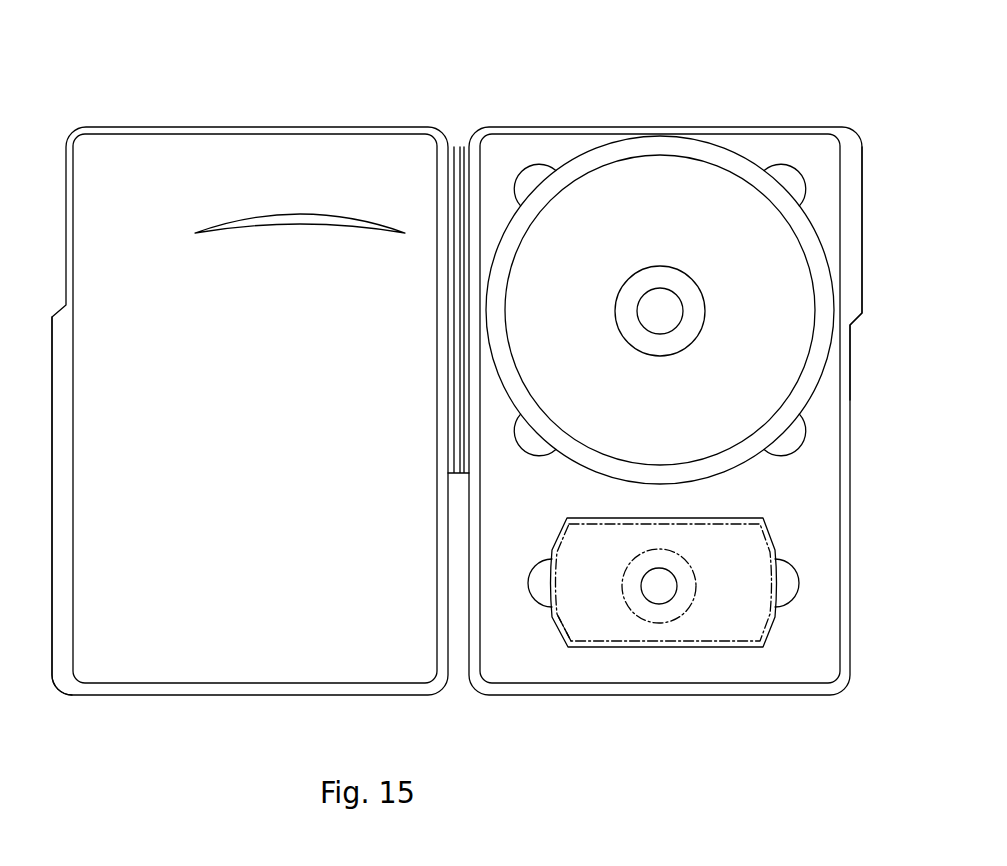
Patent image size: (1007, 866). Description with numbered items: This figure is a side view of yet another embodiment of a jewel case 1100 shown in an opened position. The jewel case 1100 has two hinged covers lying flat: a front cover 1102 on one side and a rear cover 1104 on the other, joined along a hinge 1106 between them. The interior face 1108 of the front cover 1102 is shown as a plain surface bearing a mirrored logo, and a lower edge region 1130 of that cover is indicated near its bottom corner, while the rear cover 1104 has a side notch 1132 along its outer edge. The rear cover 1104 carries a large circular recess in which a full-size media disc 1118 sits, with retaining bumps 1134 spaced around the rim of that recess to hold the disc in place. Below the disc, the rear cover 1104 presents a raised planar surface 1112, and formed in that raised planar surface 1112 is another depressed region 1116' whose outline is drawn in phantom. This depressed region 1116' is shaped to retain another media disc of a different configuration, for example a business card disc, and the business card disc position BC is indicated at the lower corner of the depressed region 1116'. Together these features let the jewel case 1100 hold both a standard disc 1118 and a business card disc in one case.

The jewel case 1100 is at (557, 84).
The lid panel 1102 is at (192, 127).
The rear cover 1104 is at (683, 126).
The hinge 1106 is at (462, 145).
The lid interior surface 1108 is at (217, 655).
The raised planar surface 1112 is at (633, 655).
The depressed region 1116' is at (670, 643).
The disc 1118 is at (660, 310).
The lid lip 1130 is at (63, 612).
The base side notch 1132 is at (855, 207).
The disc retaining bump 1134 is at (543, 170).
The bottom corner BC is at (562, 638).